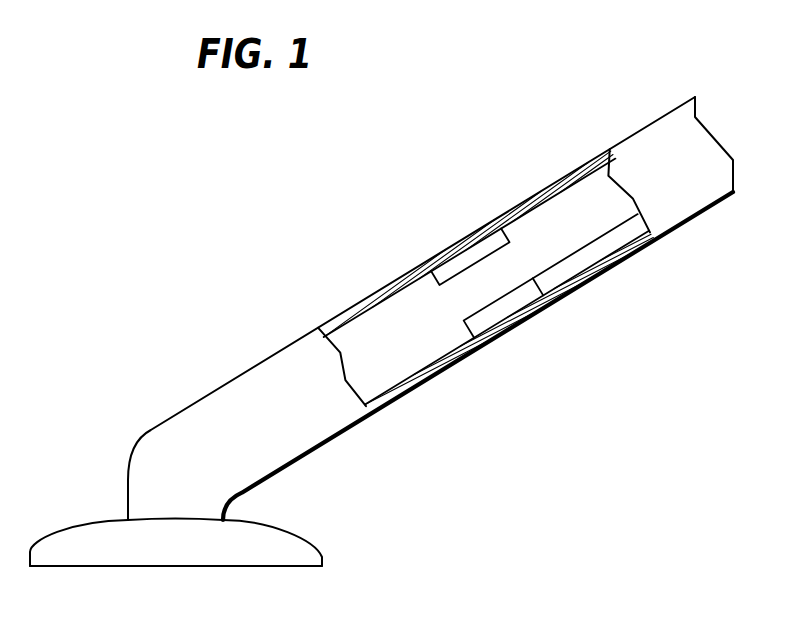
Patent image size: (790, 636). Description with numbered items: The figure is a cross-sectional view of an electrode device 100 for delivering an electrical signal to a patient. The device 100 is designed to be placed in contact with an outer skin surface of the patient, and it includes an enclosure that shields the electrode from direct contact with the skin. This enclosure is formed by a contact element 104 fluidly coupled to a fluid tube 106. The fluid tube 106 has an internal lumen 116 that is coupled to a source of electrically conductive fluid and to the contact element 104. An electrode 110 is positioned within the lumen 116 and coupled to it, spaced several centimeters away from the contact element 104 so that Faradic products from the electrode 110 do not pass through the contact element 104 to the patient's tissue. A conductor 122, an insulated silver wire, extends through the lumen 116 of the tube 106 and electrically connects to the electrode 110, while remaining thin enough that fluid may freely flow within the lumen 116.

The device 100 is at (173, 288).
The contact element 104 is at (73, 537).
The fluid tube 106 is at (307, 454).
The electrode 110 is at (468, 258).
The internal lumen 116 is at (400, 303).
The conductor 122 is at (575, 262).